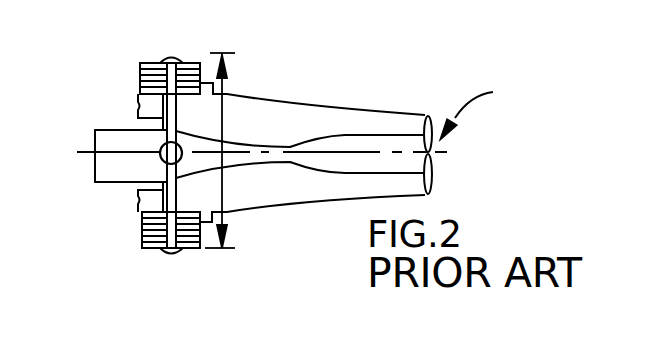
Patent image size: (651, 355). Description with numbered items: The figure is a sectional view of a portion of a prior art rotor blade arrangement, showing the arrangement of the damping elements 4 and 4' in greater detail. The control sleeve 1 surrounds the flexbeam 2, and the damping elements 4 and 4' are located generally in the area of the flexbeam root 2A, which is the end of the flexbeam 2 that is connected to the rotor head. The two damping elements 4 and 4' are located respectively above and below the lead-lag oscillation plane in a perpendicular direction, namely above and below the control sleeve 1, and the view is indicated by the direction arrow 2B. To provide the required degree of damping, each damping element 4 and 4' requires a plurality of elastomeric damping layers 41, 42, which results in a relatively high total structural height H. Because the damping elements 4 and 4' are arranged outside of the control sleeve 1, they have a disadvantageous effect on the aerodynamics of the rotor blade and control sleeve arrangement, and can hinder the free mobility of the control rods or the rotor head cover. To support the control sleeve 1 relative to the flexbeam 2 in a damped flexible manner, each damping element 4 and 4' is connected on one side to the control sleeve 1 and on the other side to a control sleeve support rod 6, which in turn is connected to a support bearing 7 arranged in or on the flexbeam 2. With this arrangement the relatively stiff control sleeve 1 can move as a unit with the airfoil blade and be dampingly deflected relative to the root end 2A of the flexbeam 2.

The control sleeve 1 is at (405, 122).
The flexbeam 2 is at (93, 142).
The flexbeam root 2A is at (94, 170).
The direction of insertion 2B is at (490, 106).
The damping element 4 is at (165, 62).
The damping element 4' is at (163, 246).
The elastomeric damping layer 41 is at (142, 78).
The elastomeric damping layer 42 is at (214, 72).
The control sleeve support rod 6 is at (168, 116).
The support bearing 7 is at (182, 147).
The total structural height H is at (232, 219).